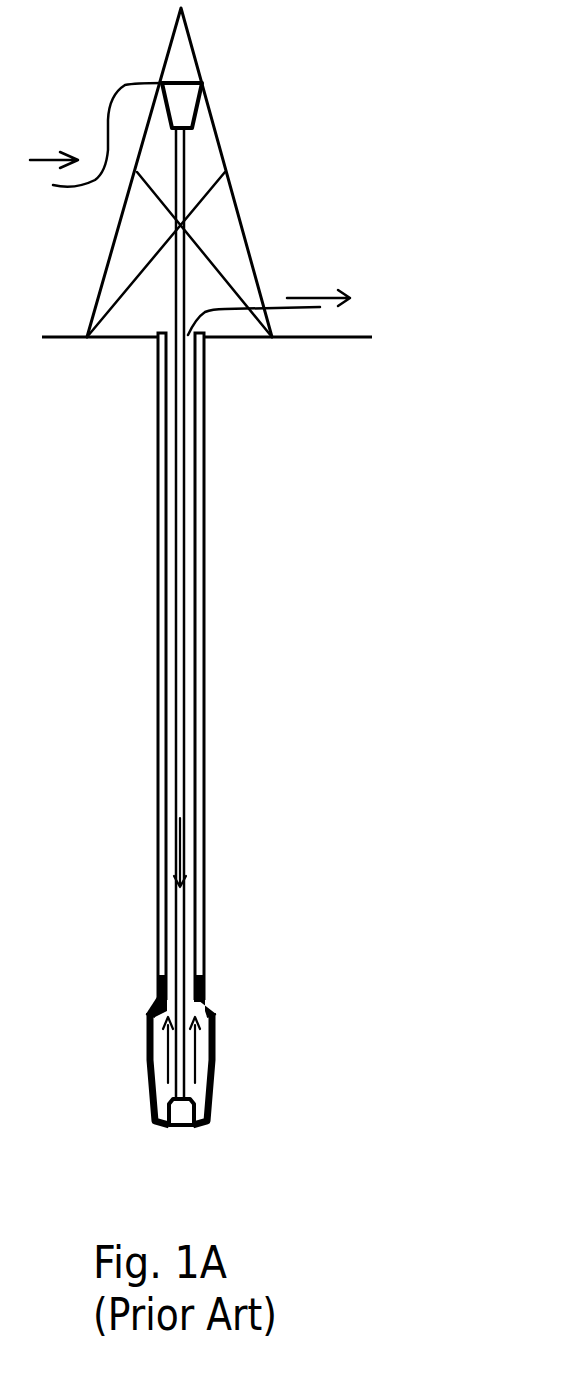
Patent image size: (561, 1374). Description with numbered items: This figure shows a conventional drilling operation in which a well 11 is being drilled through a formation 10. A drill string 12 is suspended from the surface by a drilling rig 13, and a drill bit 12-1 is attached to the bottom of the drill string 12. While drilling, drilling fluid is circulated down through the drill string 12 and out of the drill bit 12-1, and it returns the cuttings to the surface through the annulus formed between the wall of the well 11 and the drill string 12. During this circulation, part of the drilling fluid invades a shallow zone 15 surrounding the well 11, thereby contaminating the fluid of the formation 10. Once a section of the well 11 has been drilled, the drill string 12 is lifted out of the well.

The formation 10 is at (287, 928).
The well 11 is at (205, 738).
The drill string 12 is at (175, 302).
The drill bit 12-1 is at (173, 1118).
The drilling rig 13 is at (253, 120).
The shallow zone 15 is at (213, 1043).